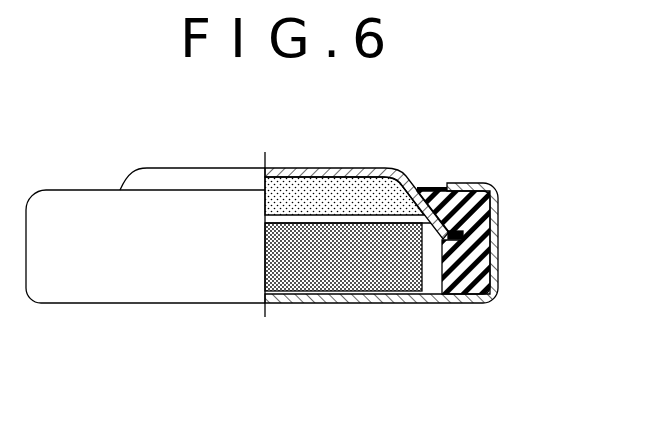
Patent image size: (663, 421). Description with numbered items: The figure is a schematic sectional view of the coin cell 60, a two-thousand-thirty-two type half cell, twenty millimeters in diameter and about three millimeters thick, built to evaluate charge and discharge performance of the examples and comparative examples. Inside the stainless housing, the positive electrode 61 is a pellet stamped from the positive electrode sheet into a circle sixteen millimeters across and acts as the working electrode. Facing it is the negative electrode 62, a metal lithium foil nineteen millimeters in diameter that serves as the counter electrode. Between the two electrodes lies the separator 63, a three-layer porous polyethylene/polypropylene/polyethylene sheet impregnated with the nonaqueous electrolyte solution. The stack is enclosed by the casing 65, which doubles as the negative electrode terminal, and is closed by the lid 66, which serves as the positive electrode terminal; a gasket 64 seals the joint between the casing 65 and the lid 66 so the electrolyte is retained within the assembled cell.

The coin cell 60 is at (503, 155).
The positive electrode 61 is at (325, 177).
The negative electrode 62 is at (390, 300).
The separator 63 is at (416, 189).
The gasket 64 is at (485, 252).
The casing 65 is at (138, 303).
The lid 66 is at (198, 168).